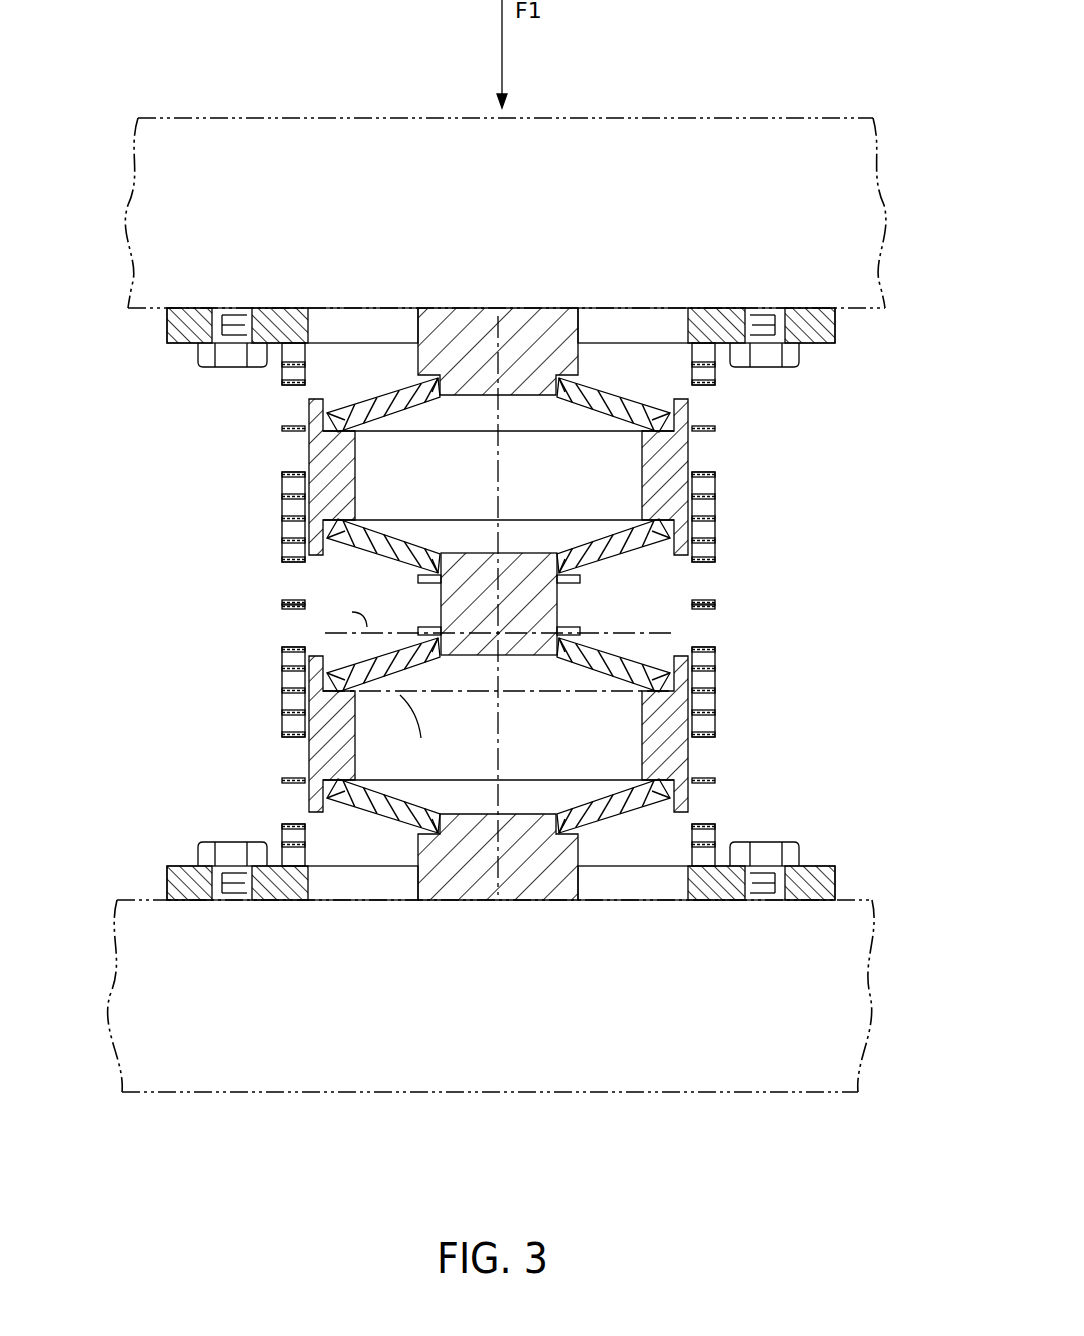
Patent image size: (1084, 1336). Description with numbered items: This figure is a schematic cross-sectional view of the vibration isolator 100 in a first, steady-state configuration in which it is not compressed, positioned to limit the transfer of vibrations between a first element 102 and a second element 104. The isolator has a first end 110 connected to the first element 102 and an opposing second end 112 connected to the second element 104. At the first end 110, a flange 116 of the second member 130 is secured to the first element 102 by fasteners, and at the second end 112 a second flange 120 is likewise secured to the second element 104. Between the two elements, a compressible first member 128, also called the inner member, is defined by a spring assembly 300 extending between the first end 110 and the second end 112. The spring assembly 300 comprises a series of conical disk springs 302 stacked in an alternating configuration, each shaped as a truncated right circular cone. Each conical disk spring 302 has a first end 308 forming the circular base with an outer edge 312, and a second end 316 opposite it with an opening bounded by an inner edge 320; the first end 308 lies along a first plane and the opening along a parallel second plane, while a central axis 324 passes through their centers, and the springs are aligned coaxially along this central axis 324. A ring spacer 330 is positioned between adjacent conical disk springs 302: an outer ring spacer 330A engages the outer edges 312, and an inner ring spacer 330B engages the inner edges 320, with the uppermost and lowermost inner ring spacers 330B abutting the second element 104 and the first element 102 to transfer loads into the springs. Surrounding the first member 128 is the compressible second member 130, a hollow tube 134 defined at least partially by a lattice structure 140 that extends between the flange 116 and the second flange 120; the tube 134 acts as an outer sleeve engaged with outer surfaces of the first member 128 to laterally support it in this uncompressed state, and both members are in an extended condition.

The vibration isolator 100 is at (118, 500).
The first element 102 is at (843, 1020).
The second element 104 is at (875, 292).
The first end 110 is at (290, 862).
The second end 112 is at (270, 320).
The flange 116 is at (165, 882).
The second flange 120 is at (168, 343).
The first member 128 is at (388, 822).
The second member 130 is at (790, 345).
The tube 134 is at (292, 518).
The lattice structure 140 is at (746, 692).
The spring assembly 300 is at (364, 372).
The conical disk spring 302 is at (602, 395).
The first end 308 is at (663, 686).
The outer edge 312 is at (706, 690).
The second end 316 is at (580, 680).
The inner edge 320 is at (583, 636).
The central axis 324 is at (503, 482).
The ring spacer 330 is at (460, 310).
The outer ring spacer 330A is at (322, 758).
The inner ring spacer 330B is at (466, 572).